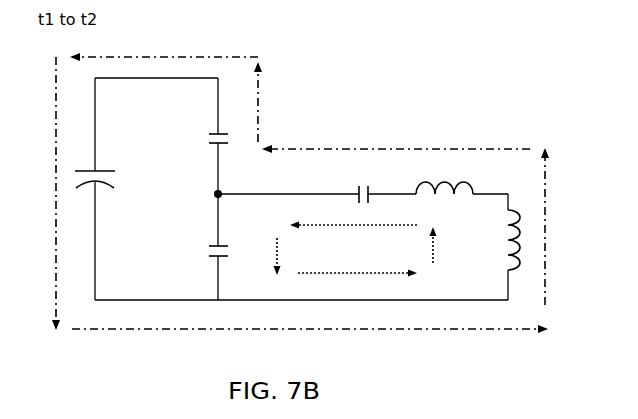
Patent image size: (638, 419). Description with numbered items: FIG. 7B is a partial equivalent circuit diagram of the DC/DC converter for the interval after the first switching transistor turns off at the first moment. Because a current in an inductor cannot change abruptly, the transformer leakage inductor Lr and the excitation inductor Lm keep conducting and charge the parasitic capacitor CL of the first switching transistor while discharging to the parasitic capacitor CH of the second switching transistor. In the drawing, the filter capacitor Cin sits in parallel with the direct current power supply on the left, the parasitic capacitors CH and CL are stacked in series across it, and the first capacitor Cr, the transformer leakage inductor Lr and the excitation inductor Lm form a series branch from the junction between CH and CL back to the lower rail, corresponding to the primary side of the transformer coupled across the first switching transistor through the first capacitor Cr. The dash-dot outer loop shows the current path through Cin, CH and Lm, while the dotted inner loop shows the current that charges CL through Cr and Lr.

The filter capacitor Cin is at (116, 189).
The parasitic capacitor of the second switching transistor CH is at (200, 136).
The parasitic capacitor of the first switching transistor CL is at (232, 247).
The first capacitor Cr is at (317, 181).
The transformer leakage inductor Lr is at (462, 175).
The excitation inductor Lm is at (498, 247).